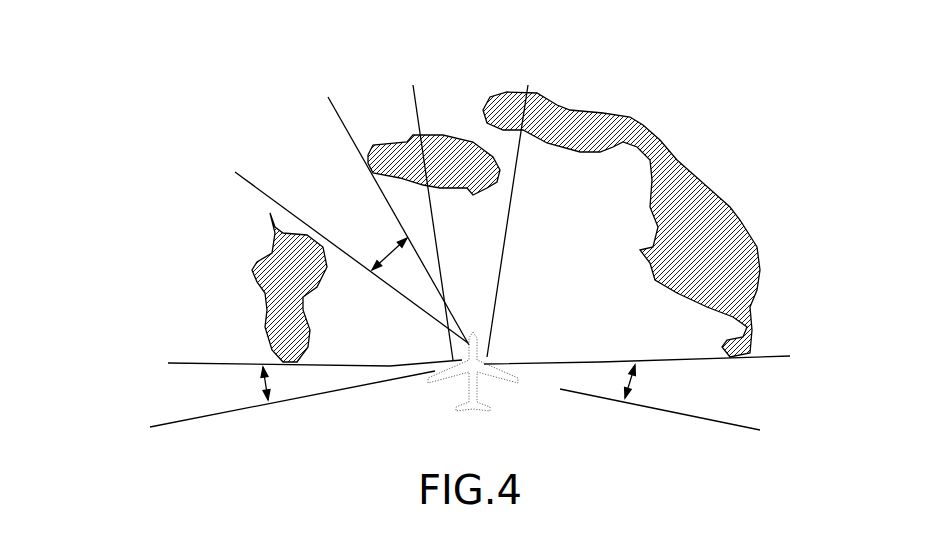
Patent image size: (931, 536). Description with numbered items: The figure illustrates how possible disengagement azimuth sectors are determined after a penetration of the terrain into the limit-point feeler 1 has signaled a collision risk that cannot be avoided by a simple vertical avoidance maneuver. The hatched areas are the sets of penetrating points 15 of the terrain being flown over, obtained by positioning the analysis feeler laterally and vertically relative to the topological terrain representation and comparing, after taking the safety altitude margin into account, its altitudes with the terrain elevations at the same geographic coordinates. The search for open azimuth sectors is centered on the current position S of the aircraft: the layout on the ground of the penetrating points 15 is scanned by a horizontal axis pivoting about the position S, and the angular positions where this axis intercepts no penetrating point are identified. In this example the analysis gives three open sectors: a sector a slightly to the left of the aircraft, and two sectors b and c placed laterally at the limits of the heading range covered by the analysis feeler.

The limit-point feeler 1 is at (470, 72).
The penetrating points of the terrain 15 is at (273, 282).
The current position of the aircraft S is at (491, 352).
The open azimuth sector a is at (387, 247).
The open azimuth sector b is at (254, 383).
The open azimuth sector c is at (641, 384).